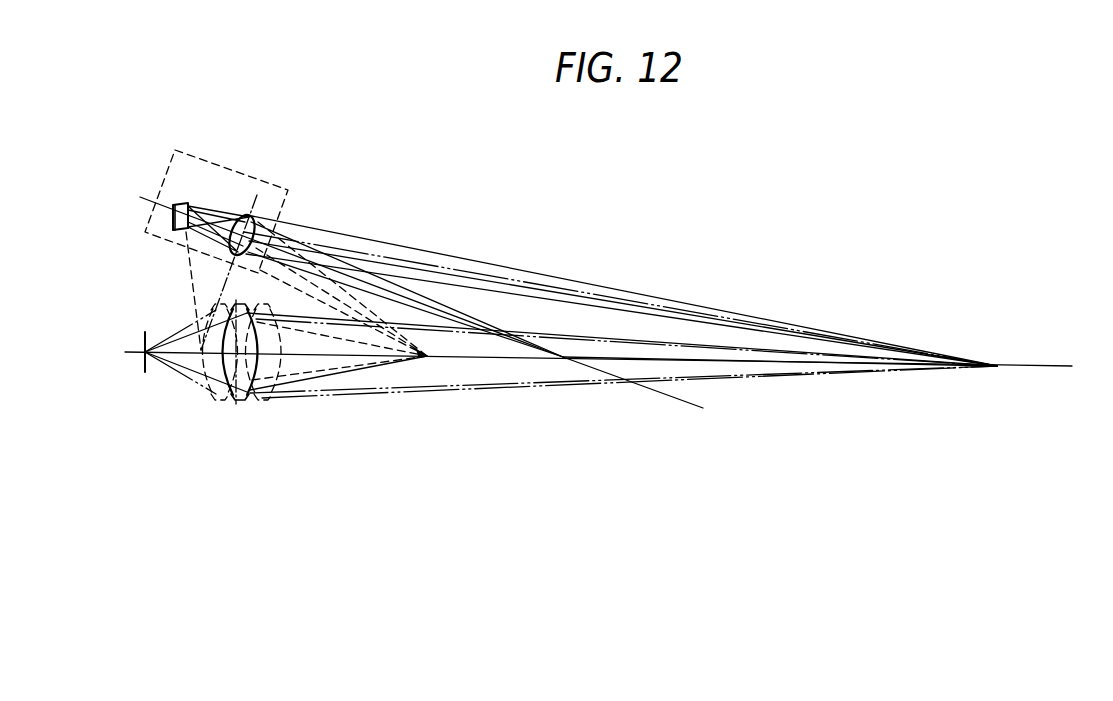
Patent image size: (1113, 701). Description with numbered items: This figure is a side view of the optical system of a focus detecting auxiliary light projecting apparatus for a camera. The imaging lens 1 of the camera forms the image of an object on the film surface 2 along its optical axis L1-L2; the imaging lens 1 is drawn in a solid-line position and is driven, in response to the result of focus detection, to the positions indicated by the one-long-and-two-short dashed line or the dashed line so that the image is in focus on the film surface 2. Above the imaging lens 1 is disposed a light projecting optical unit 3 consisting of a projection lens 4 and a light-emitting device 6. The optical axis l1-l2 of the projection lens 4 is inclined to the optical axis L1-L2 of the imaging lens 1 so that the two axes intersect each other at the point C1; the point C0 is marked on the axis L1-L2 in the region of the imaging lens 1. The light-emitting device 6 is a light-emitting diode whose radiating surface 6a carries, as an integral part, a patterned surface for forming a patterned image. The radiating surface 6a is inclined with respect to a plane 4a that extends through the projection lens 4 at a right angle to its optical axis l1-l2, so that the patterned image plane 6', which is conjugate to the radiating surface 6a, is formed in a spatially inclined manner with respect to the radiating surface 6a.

The imaging lens 1 is at (240, 397).
The film surface 2 is at (143, 370).
The light projecting optical unit 3 is at (227, 164).
The projection lens 4 is at (253, 218).
The plane extending through the projection lens at a right angle to its optical axis 4a is at (258, 196).
The light-emitting device 6 is at (162, 237).
The radiating surface 6a is at (189, 207).
The patterned image plane 6' is at (780, 387).
The optical axis l1 of the projection lens l1 is at (340, 268).
The optical axis l2 of the projection lens l2 is at (641, 391).
The optical axis L1 of the imaging lens L1 is at (174, 352).
The optical axis L2 of the imaging lens L2 is at (611, 307).
The center point C0 is at (202, 352).
The intersection point C1 is at (564, 360).